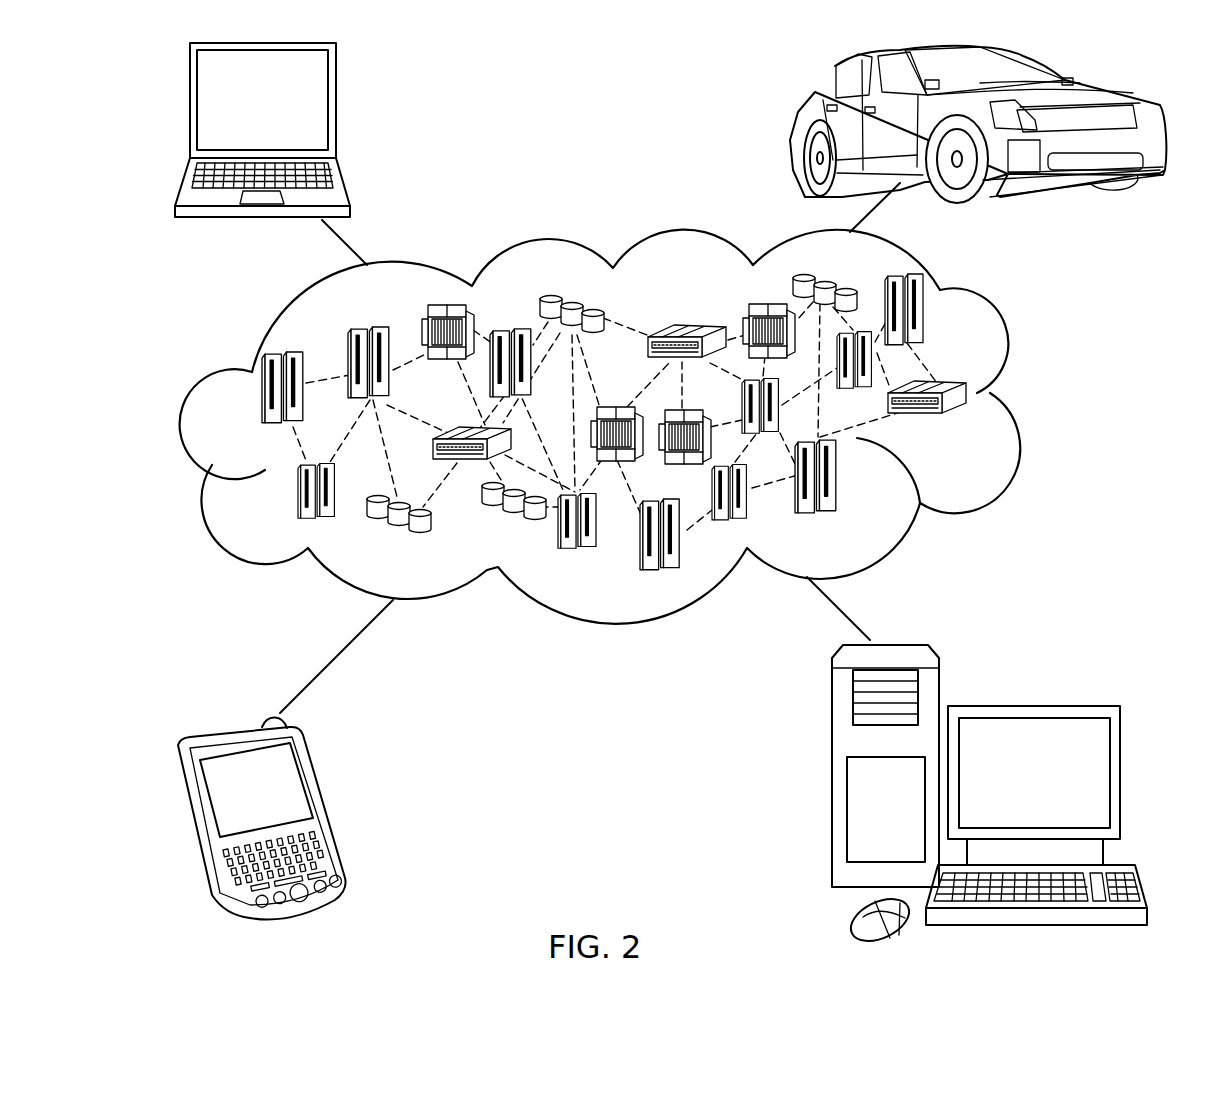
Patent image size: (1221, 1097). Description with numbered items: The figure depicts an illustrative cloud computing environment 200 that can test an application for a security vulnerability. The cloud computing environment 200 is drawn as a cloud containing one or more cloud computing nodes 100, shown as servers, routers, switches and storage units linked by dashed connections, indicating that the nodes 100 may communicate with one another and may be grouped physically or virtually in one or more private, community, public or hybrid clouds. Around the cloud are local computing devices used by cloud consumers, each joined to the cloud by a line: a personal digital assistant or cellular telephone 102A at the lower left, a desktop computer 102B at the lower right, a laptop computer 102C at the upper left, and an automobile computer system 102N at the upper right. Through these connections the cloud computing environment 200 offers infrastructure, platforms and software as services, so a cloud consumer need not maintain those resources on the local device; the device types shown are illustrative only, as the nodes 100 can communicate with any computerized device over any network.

The cloud computing nodes 100 is at (670, 496).
The cloud computing environment 200 is at (1032, 398).
The personal digital assistant (PDA) or cellular telephone 102A is at (323, 805).
The desktop computer 102B is at (1032, 705).
The laptop computer 102C is at (337, 108).
The automobile computer system 102N is at (800, 124).